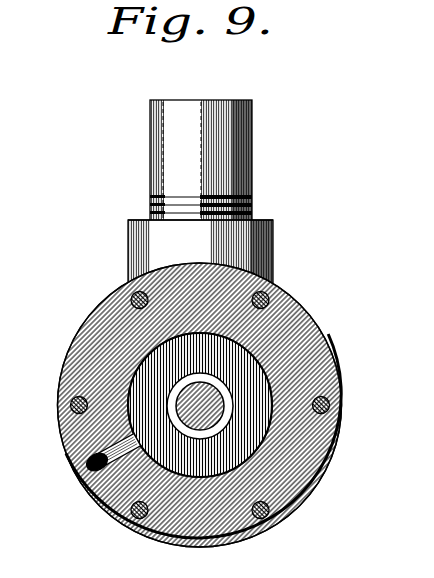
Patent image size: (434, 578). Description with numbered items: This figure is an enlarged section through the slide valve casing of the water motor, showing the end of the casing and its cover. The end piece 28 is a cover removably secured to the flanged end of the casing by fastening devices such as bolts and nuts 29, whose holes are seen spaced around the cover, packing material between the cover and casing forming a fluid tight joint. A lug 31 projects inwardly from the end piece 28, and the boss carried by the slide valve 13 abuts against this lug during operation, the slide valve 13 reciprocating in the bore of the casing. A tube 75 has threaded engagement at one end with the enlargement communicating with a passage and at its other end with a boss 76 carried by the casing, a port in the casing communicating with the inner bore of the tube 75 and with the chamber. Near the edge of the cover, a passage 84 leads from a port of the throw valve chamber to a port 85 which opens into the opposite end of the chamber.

The slide valve 13 is at (140, 370).
The end piece 28 is at (230, 483).
The bolts and nuts 29 is at (329, 404).
The lug 31 is at (190, 440).
The tube 75 is at (201, 161).
The boss 76 is at (200, 257).
The passage 84 is at (88, 467).
The port 85 is at (122, 458).